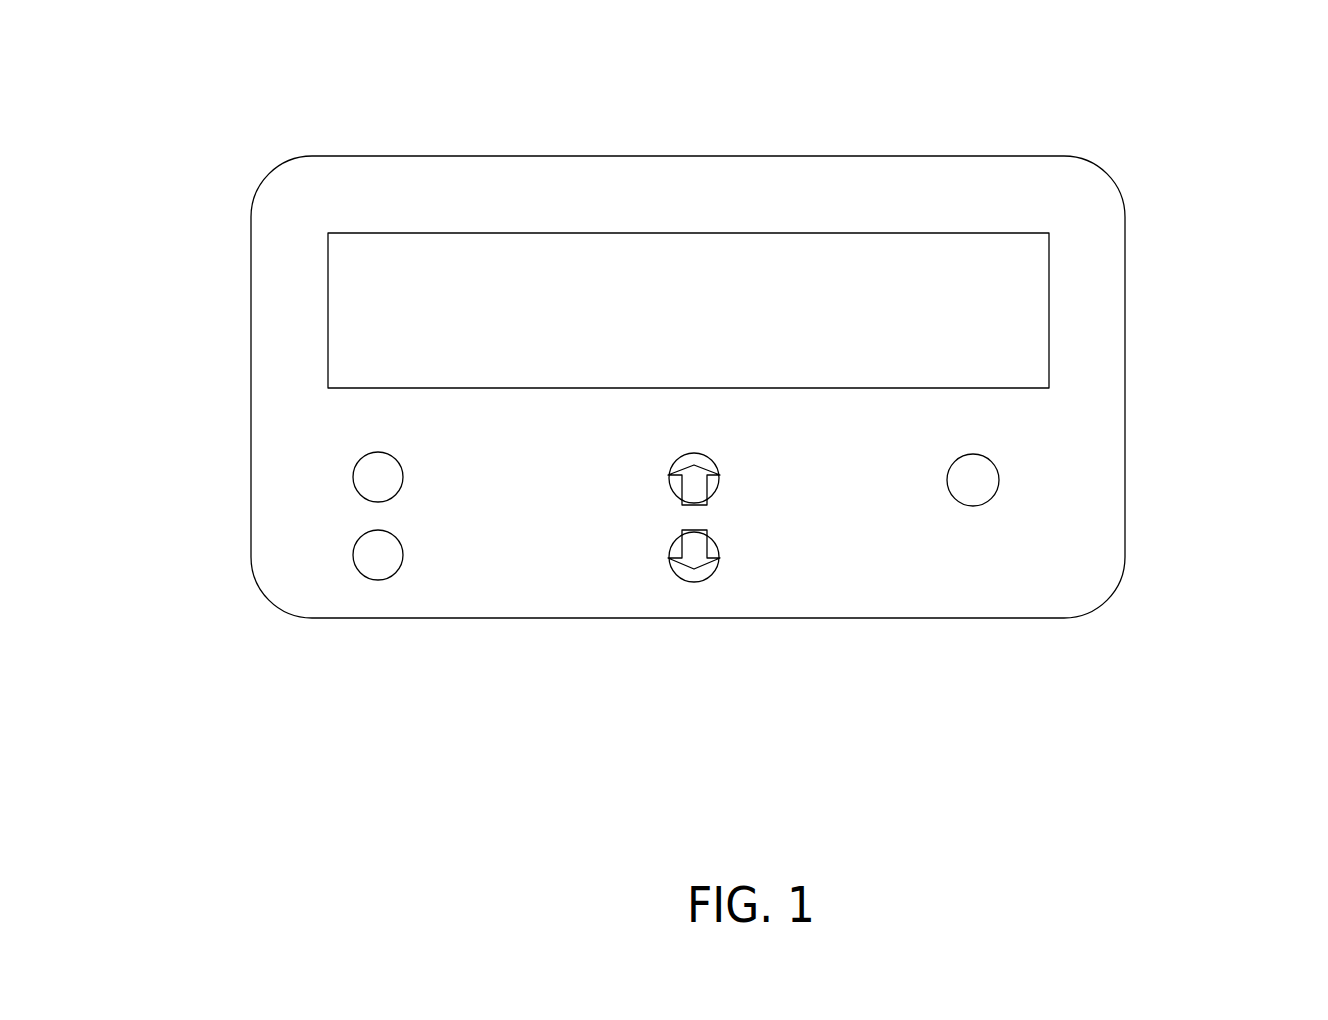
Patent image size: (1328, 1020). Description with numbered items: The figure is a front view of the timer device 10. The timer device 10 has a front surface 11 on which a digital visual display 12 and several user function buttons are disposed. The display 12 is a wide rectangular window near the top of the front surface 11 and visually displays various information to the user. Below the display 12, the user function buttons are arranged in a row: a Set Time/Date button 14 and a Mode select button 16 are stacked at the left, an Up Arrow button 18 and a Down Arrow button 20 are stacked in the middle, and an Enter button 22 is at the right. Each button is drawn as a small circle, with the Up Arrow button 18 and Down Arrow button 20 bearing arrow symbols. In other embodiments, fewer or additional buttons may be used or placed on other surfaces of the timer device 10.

The timer device 10 is at (1160, 403).
The front surface 11 is at (795, 198).
The digital visual display 12 is at (328, 323).
The Set Time/Date button 14 is at (353, 480).
The Mode select button 16 is at (353, 556).
The Up Arrow button 18 is at (668, 476).
The Down Arrow button 20 is at (720, 558).
The Enter button 22 is at (982, 505).